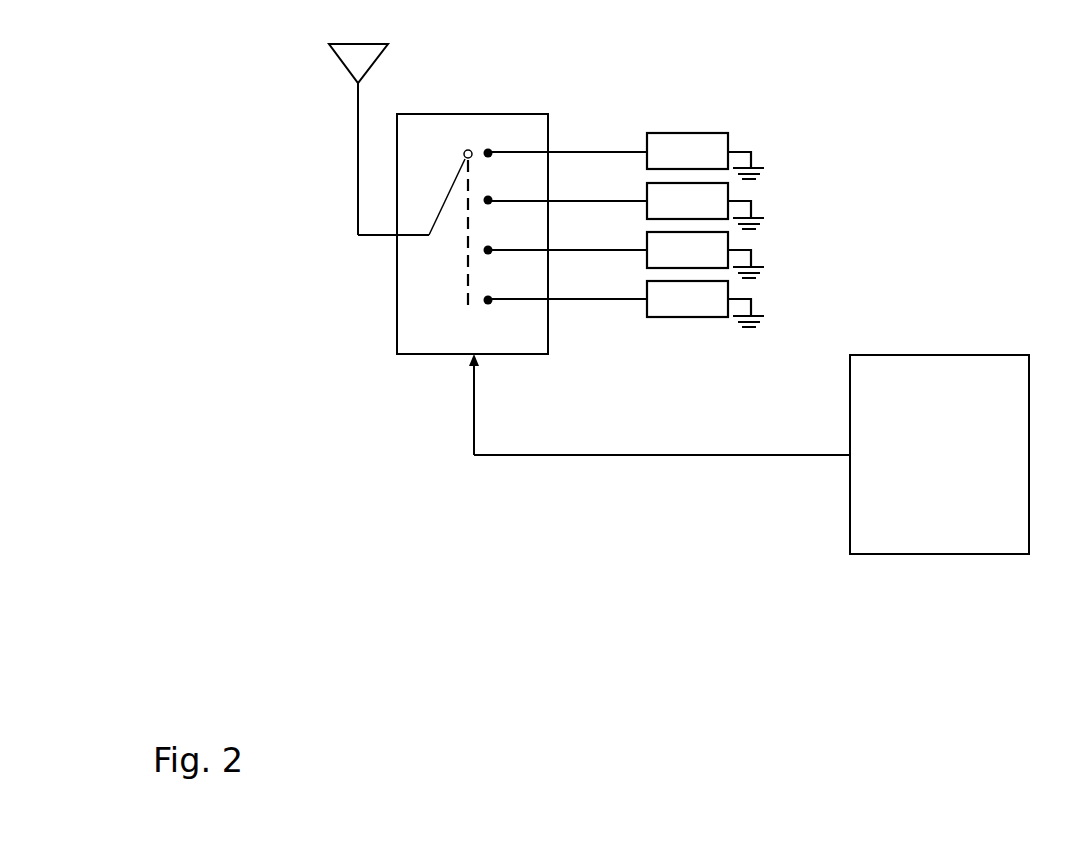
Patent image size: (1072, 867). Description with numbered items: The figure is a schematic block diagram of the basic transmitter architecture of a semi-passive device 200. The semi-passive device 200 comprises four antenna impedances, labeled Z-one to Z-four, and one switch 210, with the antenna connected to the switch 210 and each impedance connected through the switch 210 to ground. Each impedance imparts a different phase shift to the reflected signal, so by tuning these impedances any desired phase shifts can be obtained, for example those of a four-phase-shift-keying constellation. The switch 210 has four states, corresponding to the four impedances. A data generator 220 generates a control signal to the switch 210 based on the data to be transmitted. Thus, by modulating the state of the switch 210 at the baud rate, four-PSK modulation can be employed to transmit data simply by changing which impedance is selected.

The semi-passive device 200 is at (568, 565).
The switch 210 is at (498, 113).
The data generator 220 is at (910, 355).